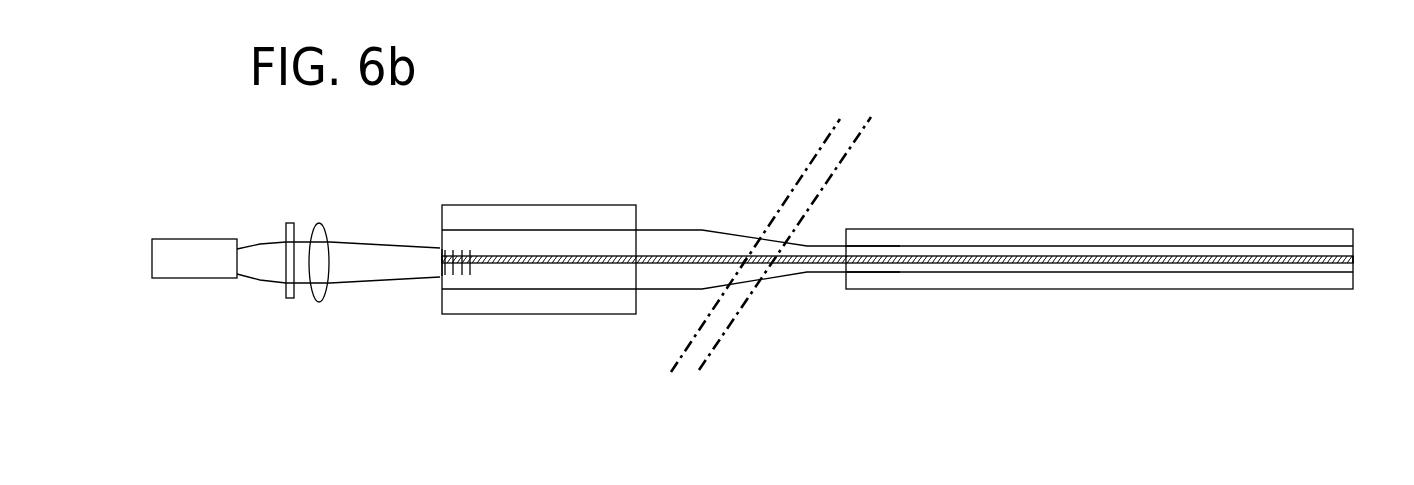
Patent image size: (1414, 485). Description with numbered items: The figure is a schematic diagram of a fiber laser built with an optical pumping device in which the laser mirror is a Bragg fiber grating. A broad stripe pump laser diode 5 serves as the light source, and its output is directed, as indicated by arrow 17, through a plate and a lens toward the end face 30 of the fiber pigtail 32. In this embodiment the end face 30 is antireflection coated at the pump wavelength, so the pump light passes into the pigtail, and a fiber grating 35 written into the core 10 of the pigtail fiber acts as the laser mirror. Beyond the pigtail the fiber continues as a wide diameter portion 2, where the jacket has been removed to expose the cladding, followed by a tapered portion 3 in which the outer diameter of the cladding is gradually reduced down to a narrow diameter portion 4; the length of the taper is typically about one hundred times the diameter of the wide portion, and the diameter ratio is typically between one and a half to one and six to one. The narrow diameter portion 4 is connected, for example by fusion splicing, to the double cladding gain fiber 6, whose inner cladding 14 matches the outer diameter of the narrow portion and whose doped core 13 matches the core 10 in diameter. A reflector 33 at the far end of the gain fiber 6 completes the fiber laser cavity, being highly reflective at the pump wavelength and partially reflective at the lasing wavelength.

The broad stripe pump laser diode 5 is at (219, 265).
The plate / beam direction arrow 17 is at (280, 184).
The end face 30 is at (440, 248).
The fiber pigtail 32 is at (527, 213).
The wide diameter portion 2 is at (653, 280).
The core 10 is at (598, 263).
The fiber grating 35 is at (453, 277).
The tapered portion 3 is at (720, 282).
The narrow diameter portion 4 is at (820, 263).
The double cladding gain fiber 6 is at (1065, 245).
The inner cladding 14 is at (867, 248).
The doped core 13 is at (880, 263).
The reflector 33 is at (1353, 258).